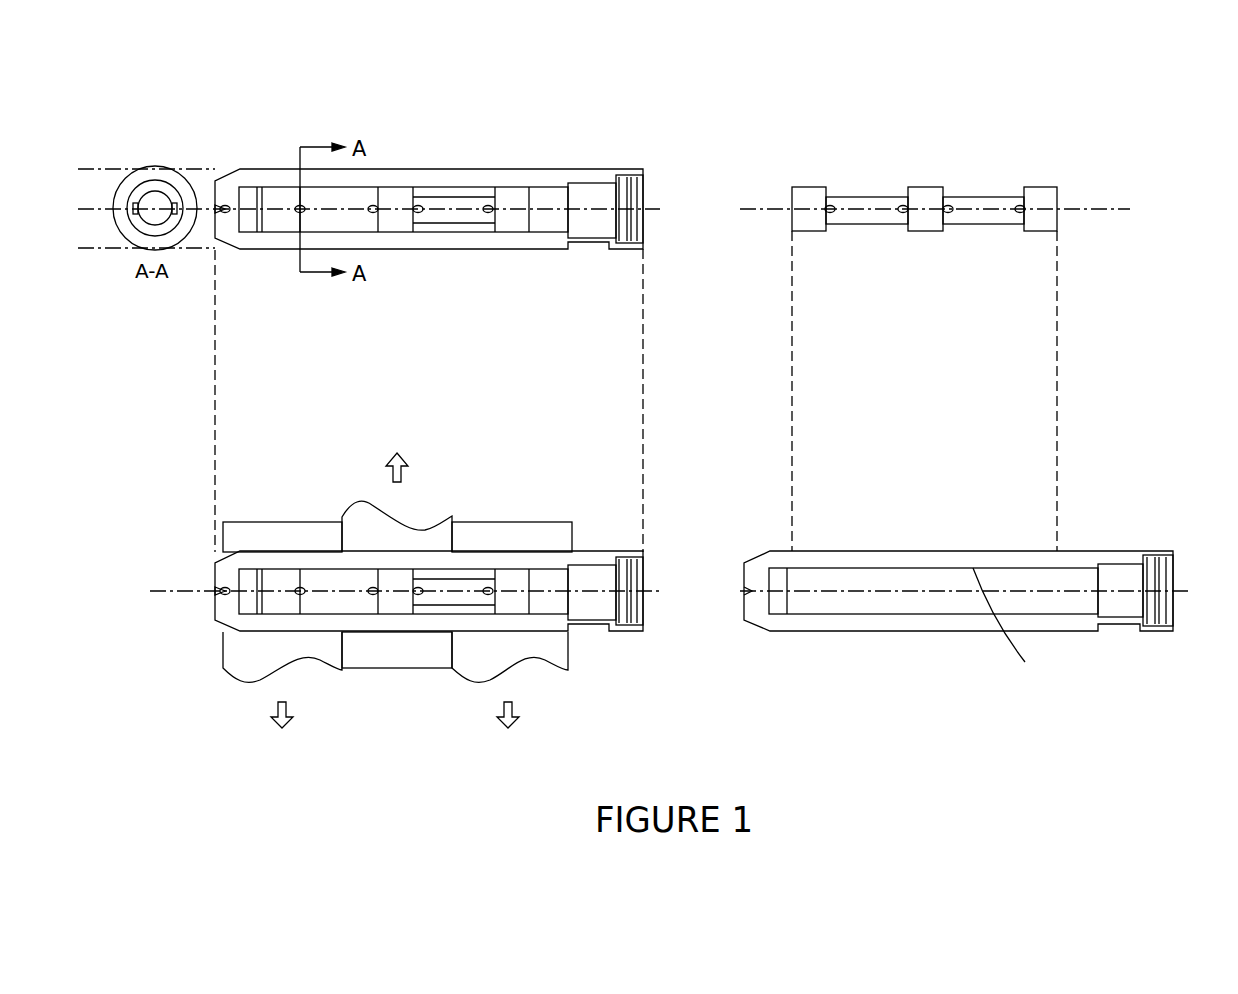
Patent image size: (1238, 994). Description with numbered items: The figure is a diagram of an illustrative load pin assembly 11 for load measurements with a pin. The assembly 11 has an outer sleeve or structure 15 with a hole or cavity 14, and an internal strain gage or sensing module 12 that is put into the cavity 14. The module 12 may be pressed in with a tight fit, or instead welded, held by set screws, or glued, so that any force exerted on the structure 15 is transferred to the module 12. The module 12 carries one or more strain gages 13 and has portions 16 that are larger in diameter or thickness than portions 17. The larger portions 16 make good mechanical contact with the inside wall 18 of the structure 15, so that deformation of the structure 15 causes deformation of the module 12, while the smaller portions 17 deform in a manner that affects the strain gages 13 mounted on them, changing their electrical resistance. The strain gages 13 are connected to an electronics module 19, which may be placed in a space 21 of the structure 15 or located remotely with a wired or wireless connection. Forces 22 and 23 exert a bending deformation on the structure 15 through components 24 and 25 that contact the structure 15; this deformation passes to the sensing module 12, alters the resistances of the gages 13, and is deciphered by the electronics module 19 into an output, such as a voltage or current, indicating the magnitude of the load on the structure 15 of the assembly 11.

The load pin assembly 11 is at (643, 339).
The sensing module 12 is at (783, 200).
The strain gages 13 is at (135, 210).
The cavity 14 is at (155, 190).
The structure 15 is at (158, 173).
The larger portions 16 is at (808, 231).
The smaller portions 17 is at (148, 217).
The inside wall 18 is at (1014, 621).
The electronics module 19 is at (592, 190).
The space 21 is at (1120, 607).
The force 22 is at (405, 458).
The force 23 is at (275, 719).
The component 24 is at (430, 527).
The components 25 is at (327, 670).